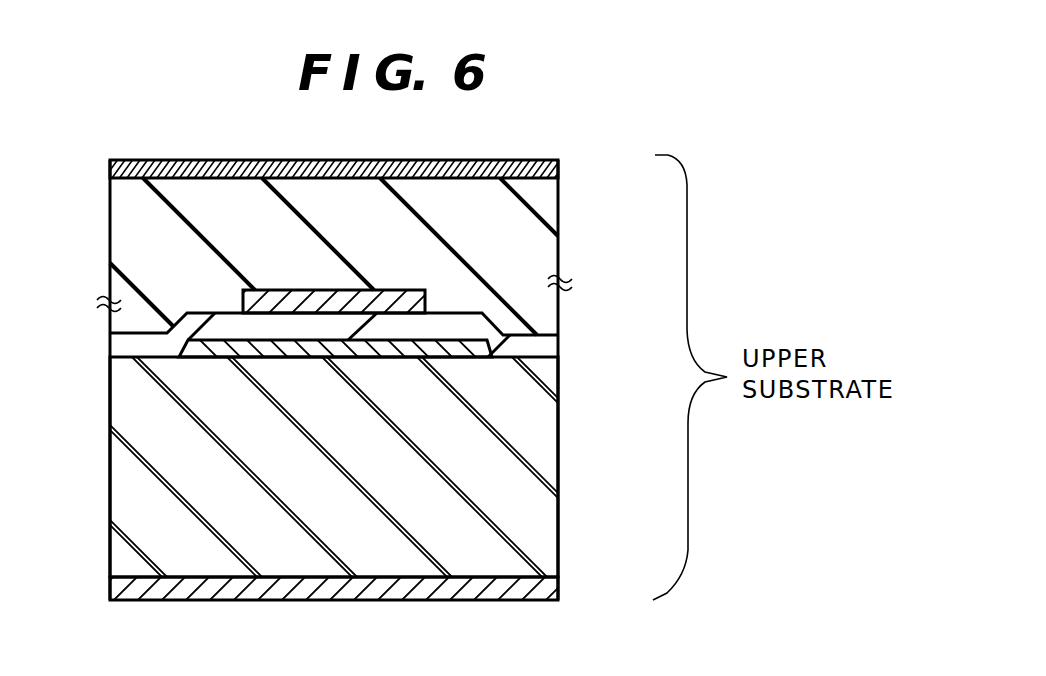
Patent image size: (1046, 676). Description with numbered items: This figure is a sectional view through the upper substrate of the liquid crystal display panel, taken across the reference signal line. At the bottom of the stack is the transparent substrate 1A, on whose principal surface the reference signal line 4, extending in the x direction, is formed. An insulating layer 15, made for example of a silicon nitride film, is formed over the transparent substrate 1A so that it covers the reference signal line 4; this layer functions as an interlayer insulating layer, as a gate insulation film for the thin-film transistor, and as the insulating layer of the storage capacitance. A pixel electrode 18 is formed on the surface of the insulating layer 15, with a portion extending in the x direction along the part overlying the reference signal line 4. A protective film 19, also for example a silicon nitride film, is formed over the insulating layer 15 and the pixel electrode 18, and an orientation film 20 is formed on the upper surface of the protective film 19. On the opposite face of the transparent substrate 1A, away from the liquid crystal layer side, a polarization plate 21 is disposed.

The orientation film 20 is at (558, 171).
The protective film 19 is at (558, 228).
The pixel electrode 18 is at (396, 290).
The insulating layer 15 is at (540, 352).
The reference signal line 4 is at (330, 358).
The transparent substrate 1A is at (552, 450).
The polarization plate 21 is at (558, 585).